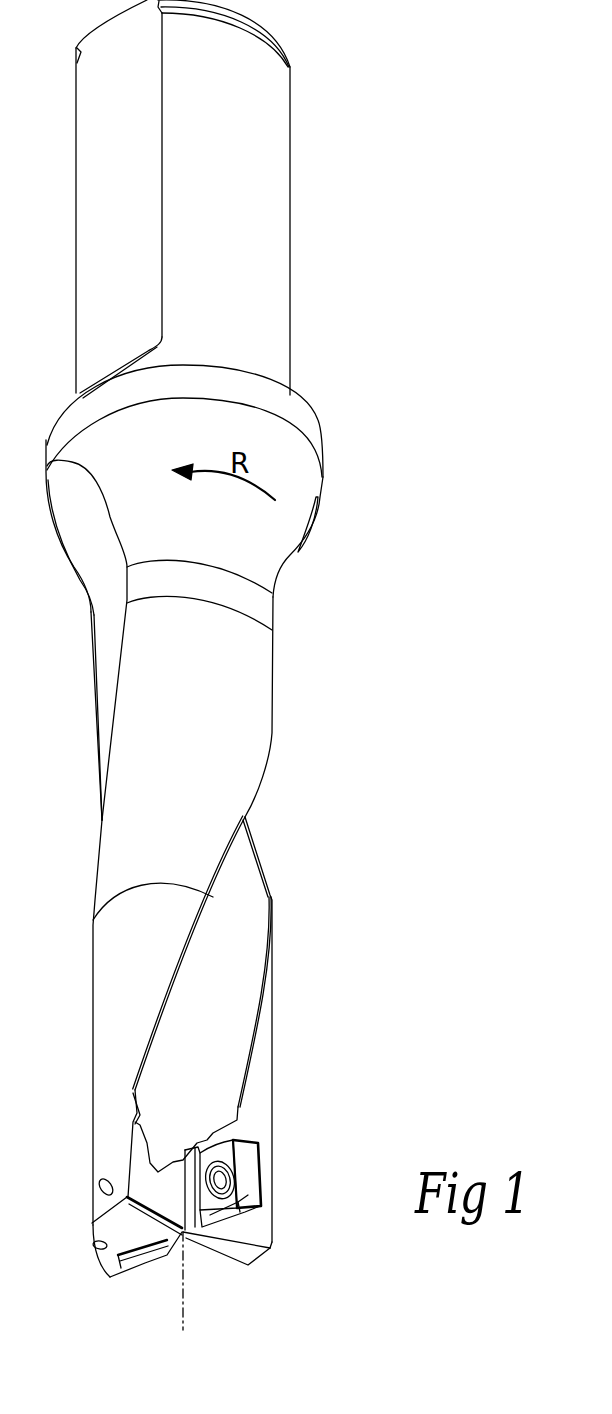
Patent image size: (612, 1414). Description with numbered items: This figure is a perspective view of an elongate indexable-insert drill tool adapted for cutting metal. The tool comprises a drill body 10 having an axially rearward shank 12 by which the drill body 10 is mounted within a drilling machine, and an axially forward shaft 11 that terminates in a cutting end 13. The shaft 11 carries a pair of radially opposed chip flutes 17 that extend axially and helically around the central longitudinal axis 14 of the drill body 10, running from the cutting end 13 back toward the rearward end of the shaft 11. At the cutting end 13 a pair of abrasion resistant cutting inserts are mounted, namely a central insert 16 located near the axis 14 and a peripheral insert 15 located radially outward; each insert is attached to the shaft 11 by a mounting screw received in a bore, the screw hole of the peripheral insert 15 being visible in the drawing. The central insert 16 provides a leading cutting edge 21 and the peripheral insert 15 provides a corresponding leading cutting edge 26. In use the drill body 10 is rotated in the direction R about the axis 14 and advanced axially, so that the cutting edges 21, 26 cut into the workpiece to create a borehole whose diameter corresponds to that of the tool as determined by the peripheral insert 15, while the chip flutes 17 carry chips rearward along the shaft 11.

The drill body 10 is at (365, 472).
The shaft 11 is at (328, 826).
The shank 12 is at (345, 136).
The cutting end 13 is at (300, 1283).
The central longitudinal axis 14 is at (185, 1300).
The peripheral insert 15 is at (250, 1172).
The central insert 16 is at (140, 1263).
The chip flutes 17 is at (248, 961).
The leading cutting edge 21 is at (170, 1260).
The leading cutting edge 26 is at (236, 1216).